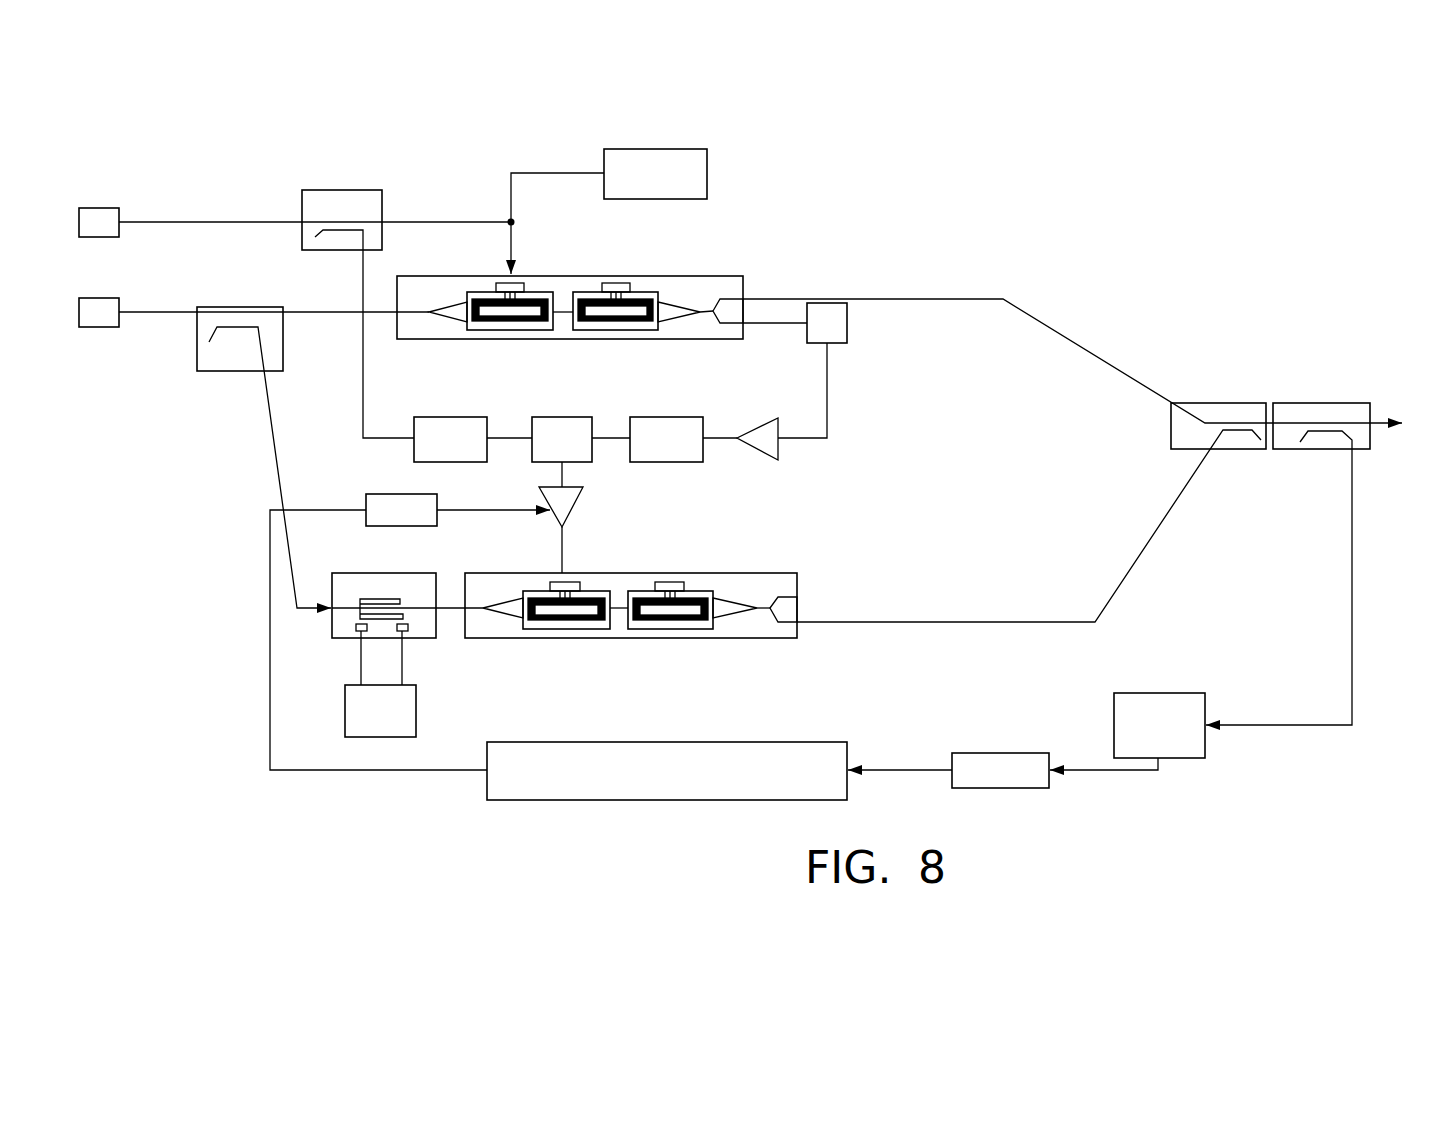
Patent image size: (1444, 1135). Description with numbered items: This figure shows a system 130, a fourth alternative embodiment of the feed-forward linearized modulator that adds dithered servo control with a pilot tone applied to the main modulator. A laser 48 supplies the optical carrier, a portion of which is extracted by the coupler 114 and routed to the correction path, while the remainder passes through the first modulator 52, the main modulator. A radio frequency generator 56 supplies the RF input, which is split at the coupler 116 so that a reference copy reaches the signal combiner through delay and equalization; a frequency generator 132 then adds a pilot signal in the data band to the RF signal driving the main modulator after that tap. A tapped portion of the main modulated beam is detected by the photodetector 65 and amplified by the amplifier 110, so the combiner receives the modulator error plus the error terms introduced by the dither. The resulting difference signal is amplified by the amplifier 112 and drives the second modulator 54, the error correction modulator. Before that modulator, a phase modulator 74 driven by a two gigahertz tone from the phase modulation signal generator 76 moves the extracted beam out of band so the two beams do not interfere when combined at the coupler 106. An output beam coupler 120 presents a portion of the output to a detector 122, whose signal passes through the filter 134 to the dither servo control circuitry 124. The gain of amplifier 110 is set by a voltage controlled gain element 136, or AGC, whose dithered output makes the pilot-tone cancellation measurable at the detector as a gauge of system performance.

The system 130 is at (818, 200).
The radio frequency generator 56 is at (80, 208).
The coupler 116 is at (343, 190).
The frequency generator 132 is at (647, 149).
The laser 48 is at (110, 297).
The coupler 114 is at (283, 358).
The first modulator 52 is at (452, 340).
The photodetector 65 is at (847, 325).
The amplifier 110 is at (748, 435).
The amplifier 112 is at (575, 510).
The voltage controlled gain element 136 is at (387, 492).
The phase modulator 74 is at (332, 623).
The phase modulation signal generator 76 is at (416, 699).
The second modulator 54 is at (735, 572).
The polarization maintaining coupler 106 is at (1228, 413).
The output beam coupler 120 is at (1308, 412).
The detector 122 is at (1138, 693).
The filter 134 is at (985, 753).
The dither servo control circuitry 124 is at (757, 742).